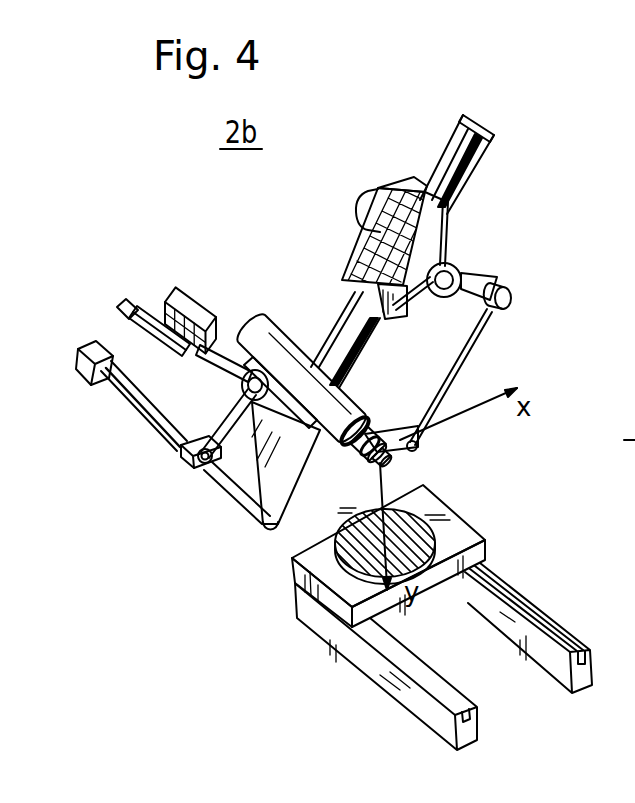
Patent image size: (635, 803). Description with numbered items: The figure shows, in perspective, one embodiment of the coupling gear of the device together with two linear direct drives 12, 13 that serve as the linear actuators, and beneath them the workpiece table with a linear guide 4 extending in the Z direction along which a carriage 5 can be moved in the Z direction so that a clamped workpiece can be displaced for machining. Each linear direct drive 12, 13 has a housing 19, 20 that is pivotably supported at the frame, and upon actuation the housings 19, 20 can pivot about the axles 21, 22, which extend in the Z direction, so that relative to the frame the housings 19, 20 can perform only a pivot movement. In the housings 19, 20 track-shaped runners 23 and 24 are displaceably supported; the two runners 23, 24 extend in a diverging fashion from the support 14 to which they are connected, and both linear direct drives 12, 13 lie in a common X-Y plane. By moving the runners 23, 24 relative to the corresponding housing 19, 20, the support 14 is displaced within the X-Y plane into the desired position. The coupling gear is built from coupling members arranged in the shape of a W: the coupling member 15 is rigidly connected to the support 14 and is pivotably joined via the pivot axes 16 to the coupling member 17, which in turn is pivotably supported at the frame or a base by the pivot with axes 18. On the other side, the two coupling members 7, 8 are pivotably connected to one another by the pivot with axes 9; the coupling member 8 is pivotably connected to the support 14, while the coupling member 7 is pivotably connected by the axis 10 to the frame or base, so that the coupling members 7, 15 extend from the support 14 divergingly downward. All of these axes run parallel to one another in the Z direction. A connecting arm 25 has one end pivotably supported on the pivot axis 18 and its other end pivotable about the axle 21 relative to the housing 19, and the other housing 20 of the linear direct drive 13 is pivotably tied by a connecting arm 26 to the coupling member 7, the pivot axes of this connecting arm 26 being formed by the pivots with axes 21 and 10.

The linear guide 4 is at (528, 637).
The carriage 5 is at (455, 533).
The coupling member 7 is at (430, 350).
The coupling member 8 is at (395, 434).
The pivot axes 9 is at (418, 447).
The axis 10 is at (510, 297).
The linear direct drive 12 is at (143, 312).
The linear direct drive 13 is at (448, 165).
The support 14 is at (262, 336).
The coupling member 15 is at (272, 473).
The pivot axes 16 is at (273, 529).
The coupling member 17 is at (149, 407).
The pivot axes 18 is at (206, 470).
The housing 19 is at (192, 326).
The housing 20 is at (400, 186).
The axle 21 is at (252, 403).
The axle 22 is at (487, 276).
The runner 23 is at (120, 304).
The runner 24 is at (467, 135).
The connecting arm 25 is at (185, 466).
The connecting arm 26 is at (462, 270).